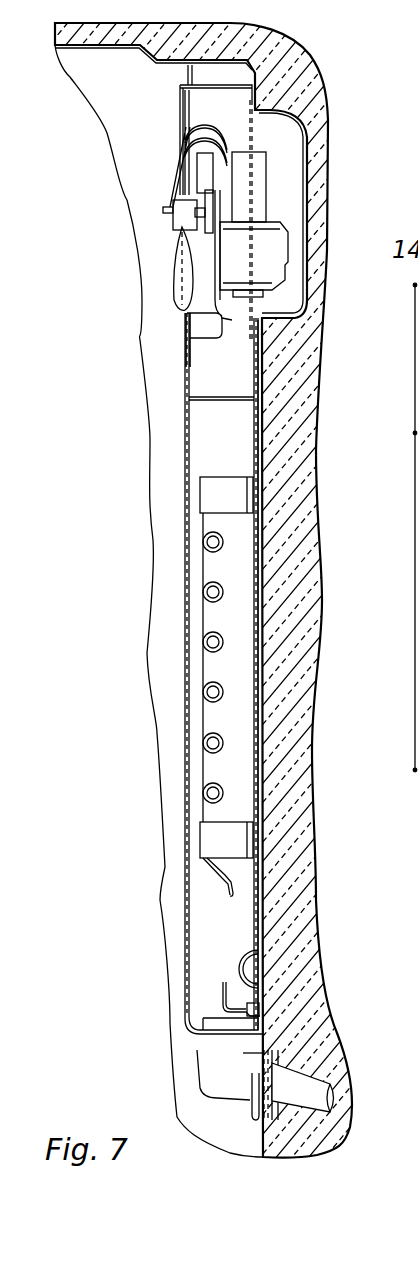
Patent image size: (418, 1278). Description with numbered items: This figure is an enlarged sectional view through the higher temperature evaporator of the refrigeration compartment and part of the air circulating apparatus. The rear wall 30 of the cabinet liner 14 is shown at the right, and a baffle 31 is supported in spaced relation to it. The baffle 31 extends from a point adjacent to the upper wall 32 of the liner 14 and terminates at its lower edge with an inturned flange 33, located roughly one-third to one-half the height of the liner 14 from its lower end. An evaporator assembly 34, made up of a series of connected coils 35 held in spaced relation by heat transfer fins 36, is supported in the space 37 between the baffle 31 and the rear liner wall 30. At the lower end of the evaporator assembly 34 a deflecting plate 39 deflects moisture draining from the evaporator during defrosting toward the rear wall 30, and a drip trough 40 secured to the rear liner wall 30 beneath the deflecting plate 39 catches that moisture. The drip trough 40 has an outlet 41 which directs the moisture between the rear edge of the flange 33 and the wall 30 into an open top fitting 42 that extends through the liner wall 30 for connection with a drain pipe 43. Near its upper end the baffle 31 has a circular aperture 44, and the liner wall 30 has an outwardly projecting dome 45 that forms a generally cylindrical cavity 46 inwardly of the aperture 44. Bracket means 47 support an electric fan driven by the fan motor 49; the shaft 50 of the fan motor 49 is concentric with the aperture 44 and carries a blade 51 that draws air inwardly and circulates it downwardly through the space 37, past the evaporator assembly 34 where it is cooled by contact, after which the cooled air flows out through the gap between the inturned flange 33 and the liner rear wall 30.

The inner upper liner 14 is at (283, 50).
The rear wall of the cabinet liner 30 is at (260, 440).
The baffle 31 is at (182, 455).
The upper wall of the liner 32 is at (84, 45).
The inturned flange 33 is at (217, 1038).
The evaporator assembly 34 is at (210, 667).
The connected coils 35 is at (203, 590).
The heat transfer fins 36 is at (230, 618).
The space between the baffle and the rear liner wall 37 is at (233, 420).
The deflecting plate 39 is at (217, 872).
The drip trough 40 is at (225, 997).
The outlet 41 is at (260, 1008).
The open top fitting 42 is at (242, 1063).
The drain pipe 43 is at (315, 1090).
The circular aperture 44 is at (187, 315).
The outwardly projecting dome 45 is at (310, 192).
The cylindrical cavity 46 is at (290, 158).
The bracket means 47 is at (222, 318).
The fan motor 49 is at (275, 219).
The shaft 50 is at (172, 210).
The blade 51 is at (177, 275).